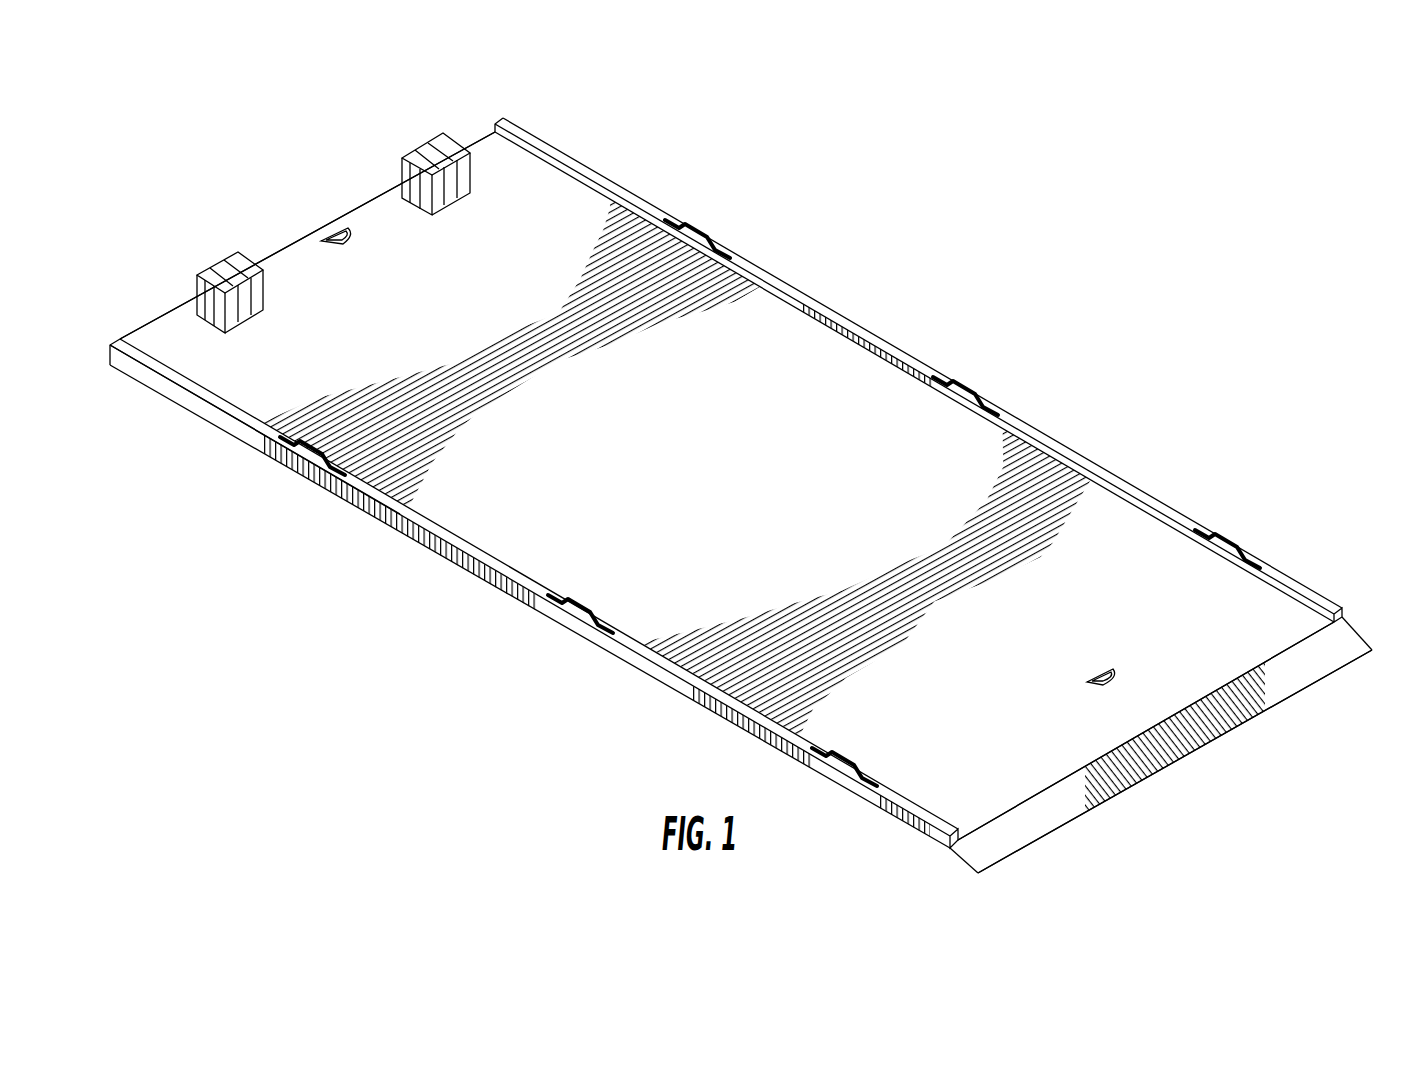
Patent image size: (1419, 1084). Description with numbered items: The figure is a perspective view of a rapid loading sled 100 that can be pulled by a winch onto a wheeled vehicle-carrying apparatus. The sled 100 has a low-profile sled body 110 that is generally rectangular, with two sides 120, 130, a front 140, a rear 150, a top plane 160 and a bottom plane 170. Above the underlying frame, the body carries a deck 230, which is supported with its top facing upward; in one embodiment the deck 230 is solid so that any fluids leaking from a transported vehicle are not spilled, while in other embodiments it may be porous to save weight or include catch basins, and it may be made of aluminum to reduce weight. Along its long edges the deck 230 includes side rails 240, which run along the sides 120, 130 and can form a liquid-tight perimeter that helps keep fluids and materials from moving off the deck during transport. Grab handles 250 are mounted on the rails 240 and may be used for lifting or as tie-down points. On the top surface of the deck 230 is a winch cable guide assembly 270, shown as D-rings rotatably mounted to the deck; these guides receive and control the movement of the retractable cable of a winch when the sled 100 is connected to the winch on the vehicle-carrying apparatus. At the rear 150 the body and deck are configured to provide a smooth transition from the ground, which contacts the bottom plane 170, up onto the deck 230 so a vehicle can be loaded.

The sled 100 is at (1092, 146).
The sled body 110 is at (309, 129).
The side 120 is at (548, 124).
The side 130 is at (185, 441).
The front 140 is at (282, 242).
The rear 150 is at (1085, 843).
The top plane 160 is at (847, 393).
The bottom plane 170 is at (875, 830).
The deck 230 is at (1085, 590).
The side rails 240 is at (1040, 437).
The grab handles 250 is at (972, 382).
The winch cable guide assembly 270 is at (364, 219).